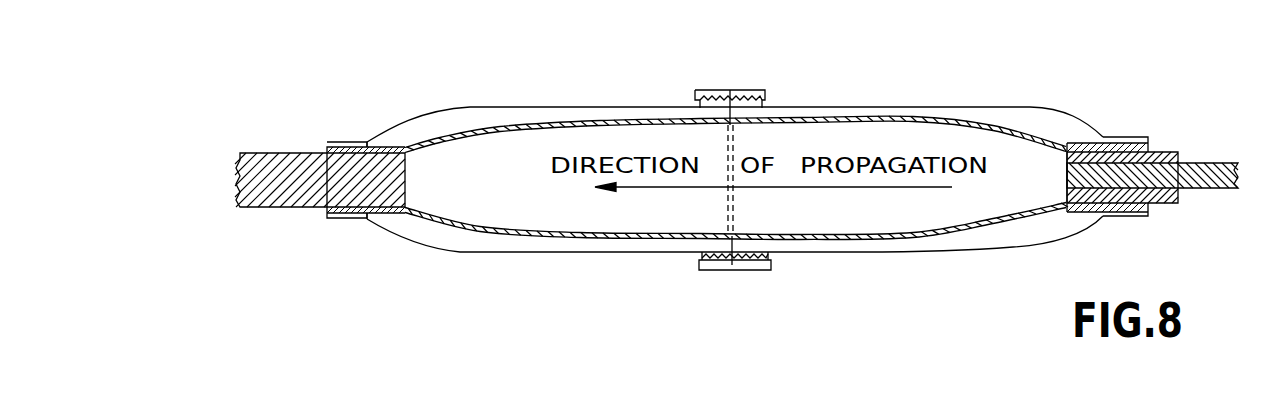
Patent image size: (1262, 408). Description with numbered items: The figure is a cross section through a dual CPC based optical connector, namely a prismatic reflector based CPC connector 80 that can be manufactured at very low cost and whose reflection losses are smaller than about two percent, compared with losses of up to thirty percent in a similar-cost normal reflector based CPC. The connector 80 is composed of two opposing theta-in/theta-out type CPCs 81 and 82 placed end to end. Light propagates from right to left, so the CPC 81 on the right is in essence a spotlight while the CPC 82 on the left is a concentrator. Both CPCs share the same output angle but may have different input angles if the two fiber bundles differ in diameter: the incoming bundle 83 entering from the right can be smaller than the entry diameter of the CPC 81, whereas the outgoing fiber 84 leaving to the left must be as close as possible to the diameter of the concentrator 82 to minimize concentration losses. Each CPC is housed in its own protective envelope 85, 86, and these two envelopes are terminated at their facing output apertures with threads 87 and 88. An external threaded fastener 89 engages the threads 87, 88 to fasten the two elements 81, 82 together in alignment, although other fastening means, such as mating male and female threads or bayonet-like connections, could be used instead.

The prismatic reflector based CPC connector 80 is at (853, 99).
The CPC 81 is at (995, 127).
The CPC 82 is at (467, 136).
The incoming bundle 83 is at (1206, 165).
The outgoing fiber 84 is at (271, 155).
The protective envelope 85 is at (483, 241).
The protective envelope 86 is at (1010, 239).
The thread 87 is at (760, 250).
The thread 88 is at (712, 248).
The external threaded fastener 89 is at (732, 264).